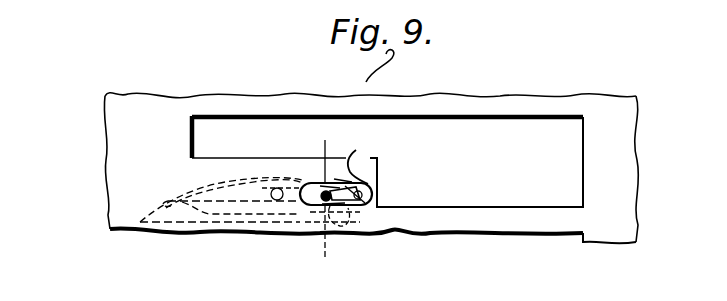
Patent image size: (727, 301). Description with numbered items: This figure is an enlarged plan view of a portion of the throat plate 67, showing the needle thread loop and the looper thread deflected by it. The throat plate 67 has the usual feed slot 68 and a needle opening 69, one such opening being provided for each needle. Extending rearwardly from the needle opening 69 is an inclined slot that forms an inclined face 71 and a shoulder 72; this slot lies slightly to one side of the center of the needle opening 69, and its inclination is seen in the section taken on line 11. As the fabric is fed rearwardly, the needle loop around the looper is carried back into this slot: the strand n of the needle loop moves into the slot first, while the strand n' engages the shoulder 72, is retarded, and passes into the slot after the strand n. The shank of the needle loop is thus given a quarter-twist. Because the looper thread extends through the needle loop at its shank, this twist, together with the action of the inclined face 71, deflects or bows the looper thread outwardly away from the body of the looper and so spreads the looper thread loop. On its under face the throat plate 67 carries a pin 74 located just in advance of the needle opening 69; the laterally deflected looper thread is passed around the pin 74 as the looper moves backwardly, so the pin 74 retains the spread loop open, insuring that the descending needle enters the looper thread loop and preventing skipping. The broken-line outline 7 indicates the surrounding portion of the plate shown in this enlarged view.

The casing 7 is at (240, 185).
The throat plate 67 is at (122, 160).
The feed slot 68 is at (512, 178).
The needle opening 69 is at (302, 180).
The section line 11- 11 is at (331, 152).
The strand of the needle loop n is at (363, 155).
The strand of the needle loop n' is at (302, 233).
The shoulder 72 is at (323, 199).
The inclined face 71 is at (356, 206).
The pin 74 is at (283, 200).